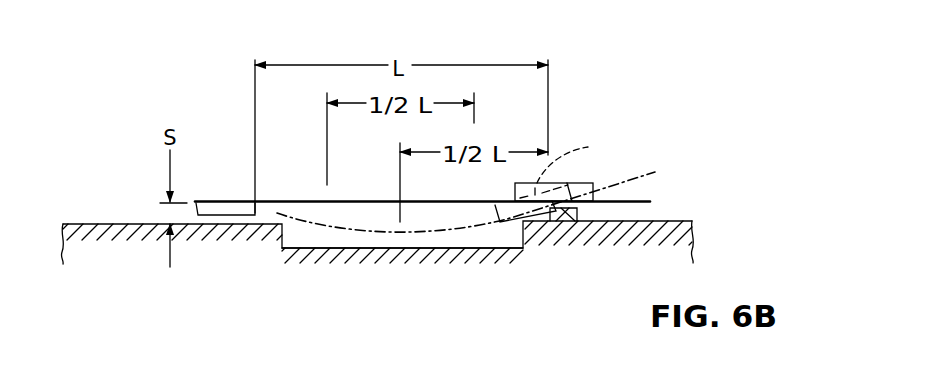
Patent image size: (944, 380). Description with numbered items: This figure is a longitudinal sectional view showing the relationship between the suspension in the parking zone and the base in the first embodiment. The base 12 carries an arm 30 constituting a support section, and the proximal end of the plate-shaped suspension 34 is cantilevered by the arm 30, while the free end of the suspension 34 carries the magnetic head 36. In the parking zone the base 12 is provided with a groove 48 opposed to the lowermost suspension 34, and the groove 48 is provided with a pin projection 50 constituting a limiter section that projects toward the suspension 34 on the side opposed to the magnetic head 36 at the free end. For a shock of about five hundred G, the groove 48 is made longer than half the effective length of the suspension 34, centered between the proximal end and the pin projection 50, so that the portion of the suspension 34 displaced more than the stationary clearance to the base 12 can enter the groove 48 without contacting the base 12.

The base 12 is at (261, 222).
The arm 30 is at (222, 205).
The suspension 34 is at (296, 200).
The magnetic head 36 is at (580, 182).
The groove 48 is at (485, 248).
The pin projection 50 is at (563, 220).